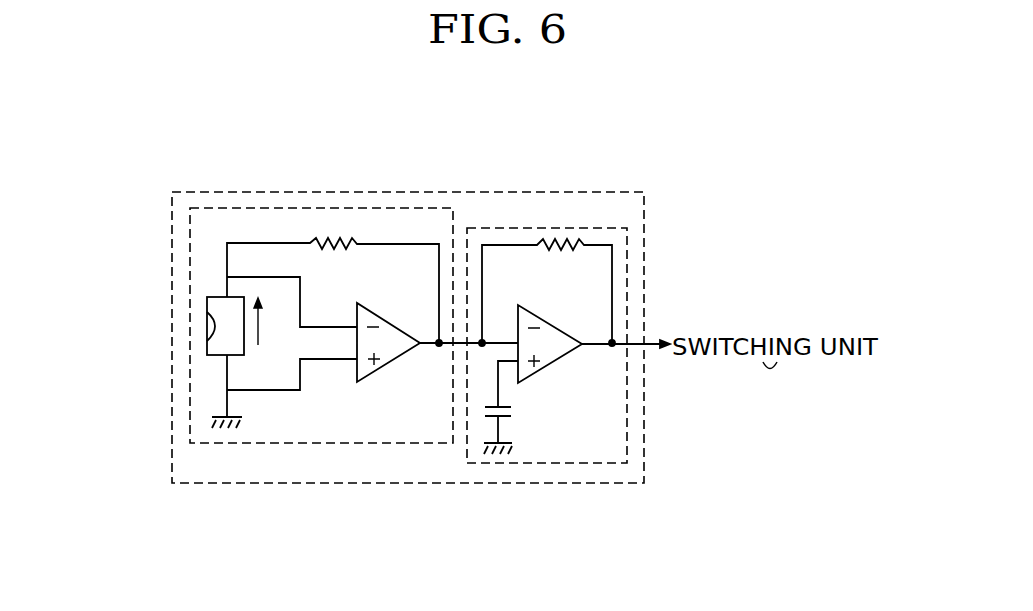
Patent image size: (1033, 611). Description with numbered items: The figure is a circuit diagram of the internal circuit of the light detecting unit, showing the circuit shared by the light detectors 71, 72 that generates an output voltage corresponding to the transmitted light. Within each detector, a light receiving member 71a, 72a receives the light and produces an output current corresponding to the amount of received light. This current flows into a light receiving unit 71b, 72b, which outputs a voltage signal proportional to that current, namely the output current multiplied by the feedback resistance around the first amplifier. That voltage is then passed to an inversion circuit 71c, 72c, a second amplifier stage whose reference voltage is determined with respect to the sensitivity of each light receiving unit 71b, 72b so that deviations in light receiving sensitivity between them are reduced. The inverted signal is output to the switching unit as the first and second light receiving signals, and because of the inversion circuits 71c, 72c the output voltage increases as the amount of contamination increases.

The light detector 71 is at (351, 353).
The light detector 72 is at (250, 483).
The light receiving member 71a is at (138, 343).
The light receiving member 72a is at (207, 345).
The light receiving unit 71b is at (354, 295).
The light receiving unit 72b is at (397, 208).
The inversion circuit 71c is at (568, 305).
The inversion circuit 72c is at (560, 228).